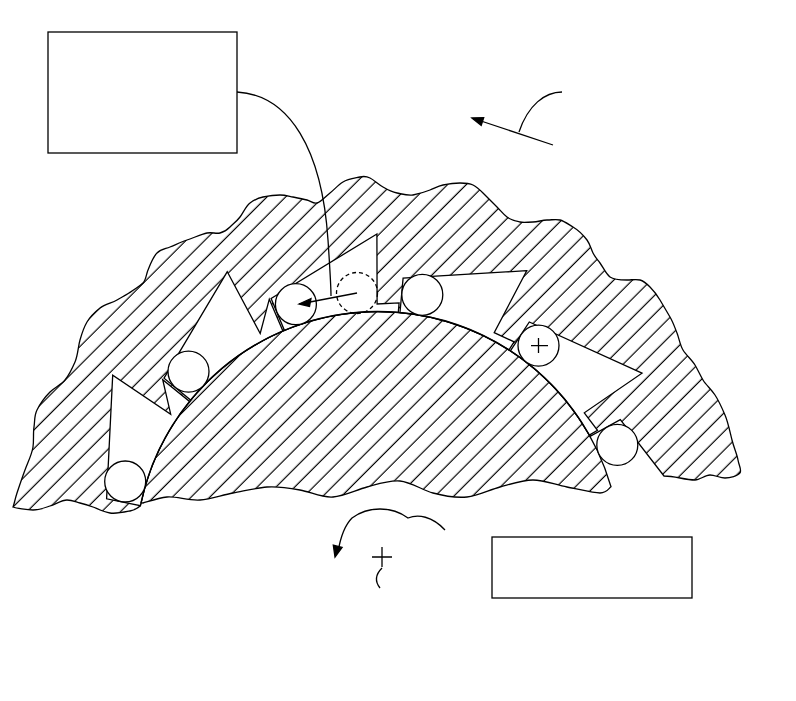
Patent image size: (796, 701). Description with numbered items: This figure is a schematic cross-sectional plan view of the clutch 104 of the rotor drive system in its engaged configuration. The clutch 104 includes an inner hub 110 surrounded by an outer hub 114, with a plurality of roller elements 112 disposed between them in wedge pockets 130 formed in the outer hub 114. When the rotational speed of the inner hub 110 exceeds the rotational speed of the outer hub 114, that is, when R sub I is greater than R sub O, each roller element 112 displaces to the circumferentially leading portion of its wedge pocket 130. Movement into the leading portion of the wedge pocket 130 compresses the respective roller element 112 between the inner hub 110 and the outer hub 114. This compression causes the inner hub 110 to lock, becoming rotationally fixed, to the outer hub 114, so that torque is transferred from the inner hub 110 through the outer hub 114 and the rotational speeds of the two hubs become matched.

The clutch 104 is at (377, 360).
The inner hub 110 is at (265, 461).
The roller element 112 is at (283, 288).
The outer hub 114 is at (388, 202).
The wedge pocket 130 is at (378, 269).